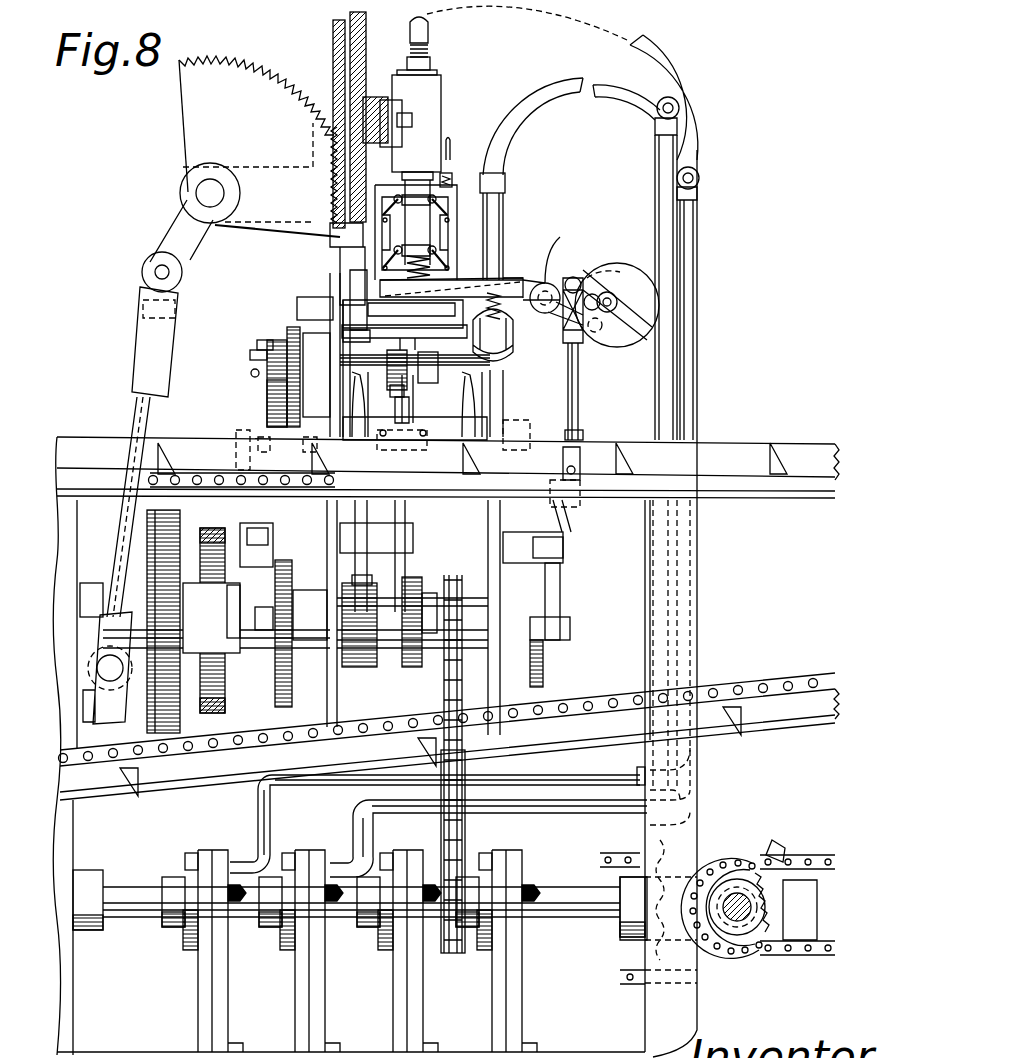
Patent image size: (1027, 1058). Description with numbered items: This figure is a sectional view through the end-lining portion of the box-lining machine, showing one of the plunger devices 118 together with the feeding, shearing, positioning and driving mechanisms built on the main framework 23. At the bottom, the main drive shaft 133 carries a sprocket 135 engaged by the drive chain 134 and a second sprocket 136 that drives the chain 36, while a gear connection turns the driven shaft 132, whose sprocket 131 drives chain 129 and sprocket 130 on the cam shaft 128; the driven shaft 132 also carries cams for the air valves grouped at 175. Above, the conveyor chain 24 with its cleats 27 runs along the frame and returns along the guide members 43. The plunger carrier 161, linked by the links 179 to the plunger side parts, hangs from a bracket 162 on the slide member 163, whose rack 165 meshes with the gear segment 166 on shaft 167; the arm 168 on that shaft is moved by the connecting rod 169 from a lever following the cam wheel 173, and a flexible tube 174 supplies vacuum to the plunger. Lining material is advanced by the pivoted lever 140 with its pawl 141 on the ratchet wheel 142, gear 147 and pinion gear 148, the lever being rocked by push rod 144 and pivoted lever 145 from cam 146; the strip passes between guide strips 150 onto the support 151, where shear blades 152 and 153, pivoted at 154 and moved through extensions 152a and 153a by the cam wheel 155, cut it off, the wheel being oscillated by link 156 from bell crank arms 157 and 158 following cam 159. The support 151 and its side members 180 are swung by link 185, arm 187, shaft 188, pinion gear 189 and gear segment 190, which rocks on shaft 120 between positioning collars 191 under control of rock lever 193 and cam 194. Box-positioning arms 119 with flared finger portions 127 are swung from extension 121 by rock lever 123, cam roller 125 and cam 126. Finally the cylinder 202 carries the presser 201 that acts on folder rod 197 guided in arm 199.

The gear segment 166 is at (255, 70).
The rack 165 is at (335, 60).
The vertically slidably mounted member 163 is at (362, 74).
The bracket 162 is at (437, 97).
The folder rod 197 is at (449, 140).
The arm 199 is at (452, 172).
The flexible tube 174 is at (664, 68).
The shaft 167 is at (200, 194).
The arm 168 is at (175, 236).
The connecting rod 169 is at (140, 414).
The plunger carrier 161 is at (425, 220).
The links 179 is at (435, 258).
The plunger device 118 is at (453, 240).
The guide strips 150 is at (470, 272).
The shear blade 152 is at (472, 283).
The presser 201 is at (474, 290).
The pivot 154 is at (548, 285).
The extension or arm 153a is at (578, 282).
The cam wheel 155 is at (612, 262).
The support 151 is at (340, 297).
The side members 180 is at (318, 305).
The pinion gear 148 is at (292, 330).
The pawl 141 is at (282, 343).
The ratchet wheel 142 is at (262, 357).
The gear 147 is at (285, 393).
The pivoted lever 140 is at (275, 412).
The shear blade 153 is at (451, 288).
The finger portions 127 is at (362, 378).
The cylinder 202 is at (514, 350).
The main framework 23 is at (492, 383).
The arm 187 is at (408, 378).
The link 185 is at (405, 392).
The shaft 188 is at (440, 370).
The gear segment 190 is at (403, 390).
The pinion gear 189 is at (410, 396).
The arms 119 is at (358, 405).
The link 156 is at (578, 400).
The extension 152a is at (600, 340).
The shaft 120 is at (450, 437).
The extension 121 is at (385, 437).
The positioning collars 191 is at (395, 437).
The cam wheel 173 is at (178, 515).
The push rod 144 is at (245, 507).
The rock lever 123 is at (356, 508).
The rock lever 193 is at (406, 513).
The sprocket 130 is at (455, 577).
The bell crank arm 157 is at (562, 512).
The bell crank arm 158 is at (560, 589).
The cam 159 is at (545, 660).
The pivoted lever 145 is at (268, 583).
The shaft 128 is at (240, 632).
The cam 146 is at (283, 660).
The cam roller 125 is at (352, 645).
The cam 126 is at (372, 668).
The cam 194 is at (410, 667).
The conveyor chain 24 is at (770, 680).
The cleats 27 is at (748, 713).
The guide members 43 is at (776, 728).
The cam actuated valve 175 is at (216, 842).
The chain 129 is at (444, 830).
The sprocket 131 is at (458, 878).
The driven shaft 132 is at (590, 917).
The drive chain 134 is at (705, 845).
The sprocket 135 is at (733, 857).
The chain 36 is at (810, 856).
The sprocket 136 is at (800, 956).
The main drive shaft 133 is at (737, 922).